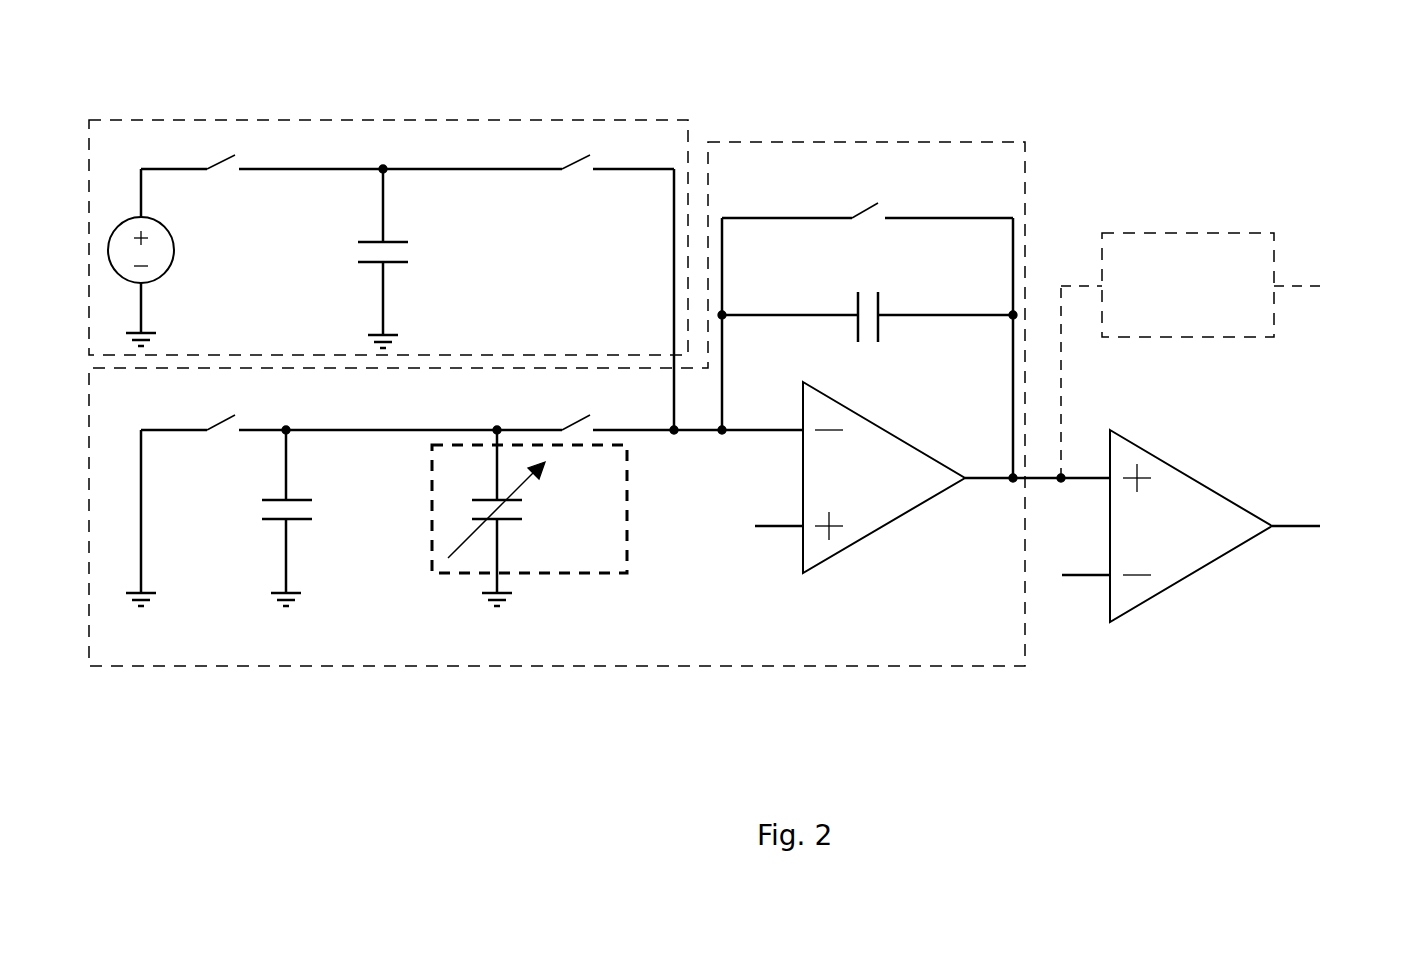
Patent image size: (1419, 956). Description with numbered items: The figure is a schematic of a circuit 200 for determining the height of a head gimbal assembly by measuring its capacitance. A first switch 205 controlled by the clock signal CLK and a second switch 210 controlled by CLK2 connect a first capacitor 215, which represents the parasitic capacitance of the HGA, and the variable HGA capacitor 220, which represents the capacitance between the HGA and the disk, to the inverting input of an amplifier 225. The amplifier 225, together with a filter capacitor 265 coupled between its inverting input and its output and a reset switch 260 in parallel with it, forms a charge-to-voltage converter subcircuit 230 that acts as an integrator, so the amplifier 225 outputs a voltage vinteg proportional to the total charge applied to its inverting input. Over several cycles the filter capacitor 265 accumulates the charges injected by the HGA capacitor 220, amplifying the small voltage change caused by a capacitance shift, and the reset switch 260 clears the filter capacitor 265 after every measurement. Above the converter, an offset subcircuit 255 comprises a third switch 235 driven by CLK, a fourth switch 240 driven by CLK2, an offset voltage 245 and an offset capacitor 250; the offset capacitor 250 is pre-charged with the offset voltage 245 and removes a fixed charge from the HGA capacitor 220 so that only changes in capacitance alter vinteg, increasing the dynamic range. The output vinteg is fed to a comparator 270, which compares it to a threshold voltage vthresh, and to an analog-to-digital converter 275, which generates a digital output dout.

The circuit 200 is at (1266, 810).
The first switch 205 is at (213, 448).
The second switch 210 is at (610, 414).
The first capacitor 215 is at (322, 518).
The HGA capacitor 220 is at (555, 577).
The amplifier 225 is at (830, 560).
The charge-to-voltage converter subcircuit 230 is at (557, 404).
The third switch 235 is at (252, 153).
The fourth switch 240 is at (609, 153).
The offset voltage 245 is at (202, 257).
The offset capacitor 250 is at (440, 258).
The offset subcircuit 255 is at (689, 95).
The reset switch 260 is at (867, 323).
The filter capacitor 265 is at (867, 297).
The comparator 270 is at (1140, 605).
The analog-to-digital converter 275 is at (1175, 233).